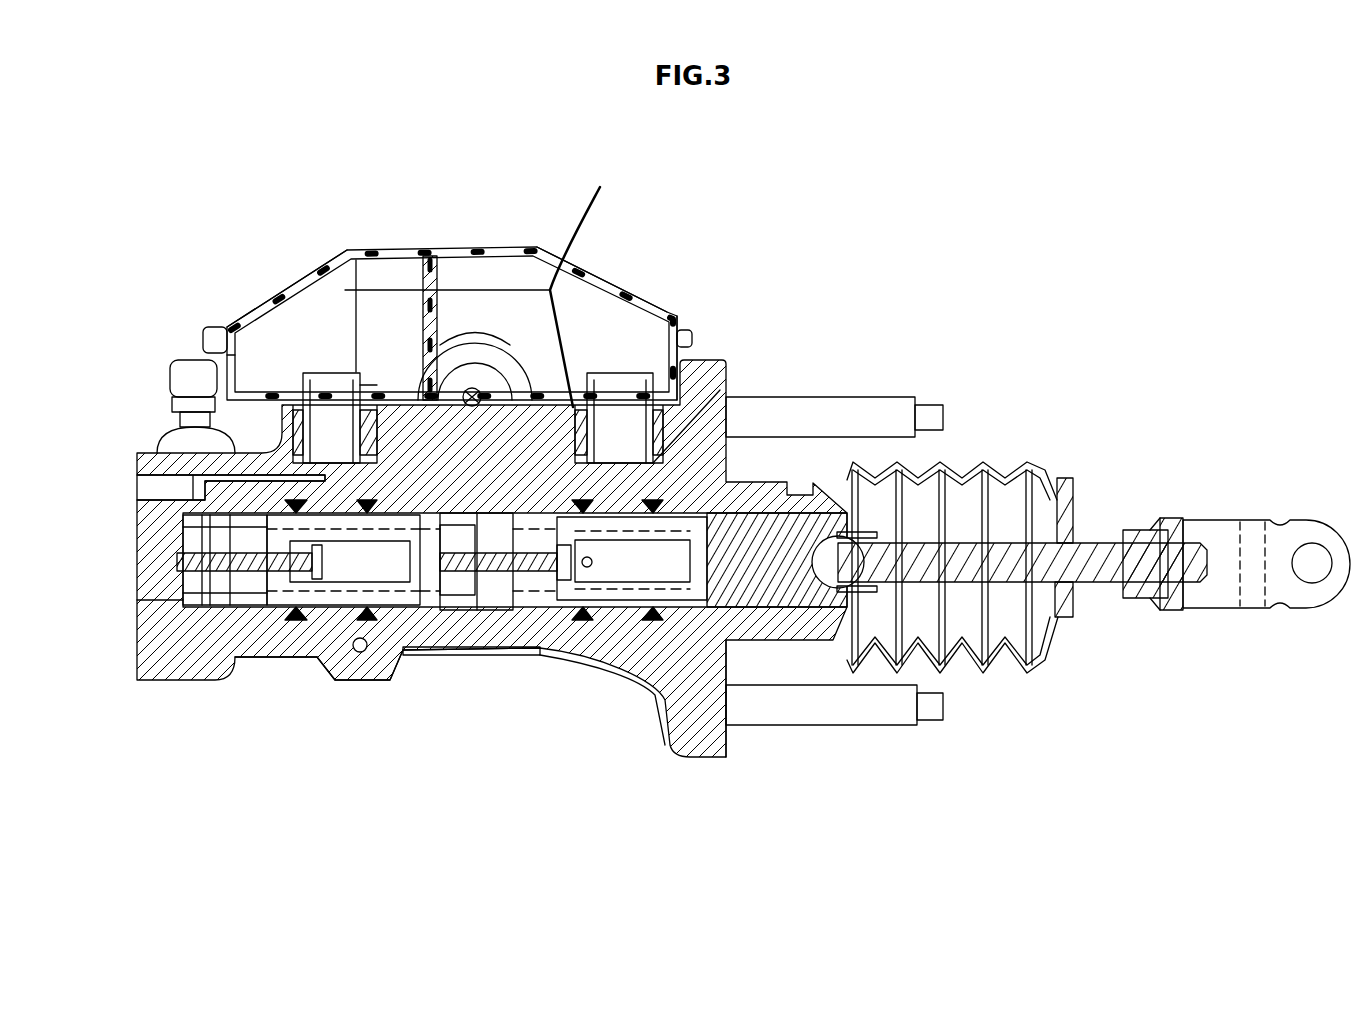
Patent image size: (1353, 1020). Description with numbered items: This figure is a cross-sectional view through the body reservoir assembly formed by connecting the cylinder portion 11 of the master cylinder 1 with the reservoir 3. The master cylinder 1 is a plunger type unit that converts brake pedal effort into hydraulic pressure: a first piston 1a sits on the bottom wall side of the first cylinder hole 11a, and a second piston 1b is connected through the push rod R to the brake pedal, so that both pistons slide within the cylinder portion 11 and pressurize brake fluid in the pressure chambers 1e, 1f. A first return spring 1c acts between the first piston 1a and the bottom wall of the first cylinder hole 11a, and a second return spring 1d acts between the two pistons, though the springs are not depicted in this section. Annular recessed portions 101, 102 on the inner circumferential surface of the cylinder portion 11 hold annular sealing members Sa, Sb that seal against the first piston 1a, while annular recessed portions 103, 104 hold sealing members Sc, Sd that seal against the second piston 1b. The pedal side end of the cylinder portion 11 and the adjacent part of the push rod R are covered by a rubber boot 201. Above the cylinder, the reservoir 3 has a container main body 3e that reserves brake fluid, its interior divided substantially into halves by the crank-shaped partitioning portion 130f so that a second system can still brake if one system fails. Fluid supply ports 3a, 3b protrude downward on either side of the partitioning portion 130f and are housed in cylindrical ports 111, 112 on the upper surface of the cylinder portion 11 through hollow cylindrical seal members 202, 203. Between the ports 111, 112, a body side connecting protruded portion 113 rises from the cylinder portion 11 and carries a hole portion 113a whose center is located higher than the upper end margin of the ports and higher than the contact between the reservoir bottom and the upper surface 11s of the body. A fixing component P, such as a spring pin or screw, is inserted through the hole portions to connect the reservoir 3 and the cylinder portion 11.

The master cylinder 1 is at (930, 262).
The first piston 1a is at (440, 612).
The second piston 1b is at (780, 543).
The first return spring 1c is at (245, 627).
The second return spring 1d is at (527, 655).
The pressure chamber 1e is at (170, 598).
The pressure chamber 1f is at (497, 600).
The reservoir 3 is at (466, 243).
The fluid supply port 3a is at (312, 392).
The fluid supply port 3b is at (607, 400).
The container main body 3e is at (587, 270).
The cylinder portion 11 is at (200, 668).
The first cylinder hole 11a is at (245, 525).
The upper surface of the body 11s is at (584, 279).
The annular recessed portion 101 is at (297, 613).
The annular recessed portion 102 is at (365, 665).
The annular recessed portion 103 is at (577, 613).
The annular recessed portion 104 is at (653, 613).
The port 111 is at (365, 445).
The port 112 is at (653, 497).
The body side connecting protruded portion 113 is at (472, 388).
The hole portion 113a is at (483, 363).
The partitioning portion 130f is at (413, 270).
The boot 201 is at (1060, 500).
The seal member 202 is at (297, 500).
The seal member 203 is at (580, 405).
The fixing component P is at (447, 372).
The push rod R is at (1100, 555).
The annular sealing member Sa is at (260, 397).
The annular sealing member Sb is at (377, 397).
The annular sealing member Sc is at (583, 497).
The annular sealing member Sd is at (718, 420).